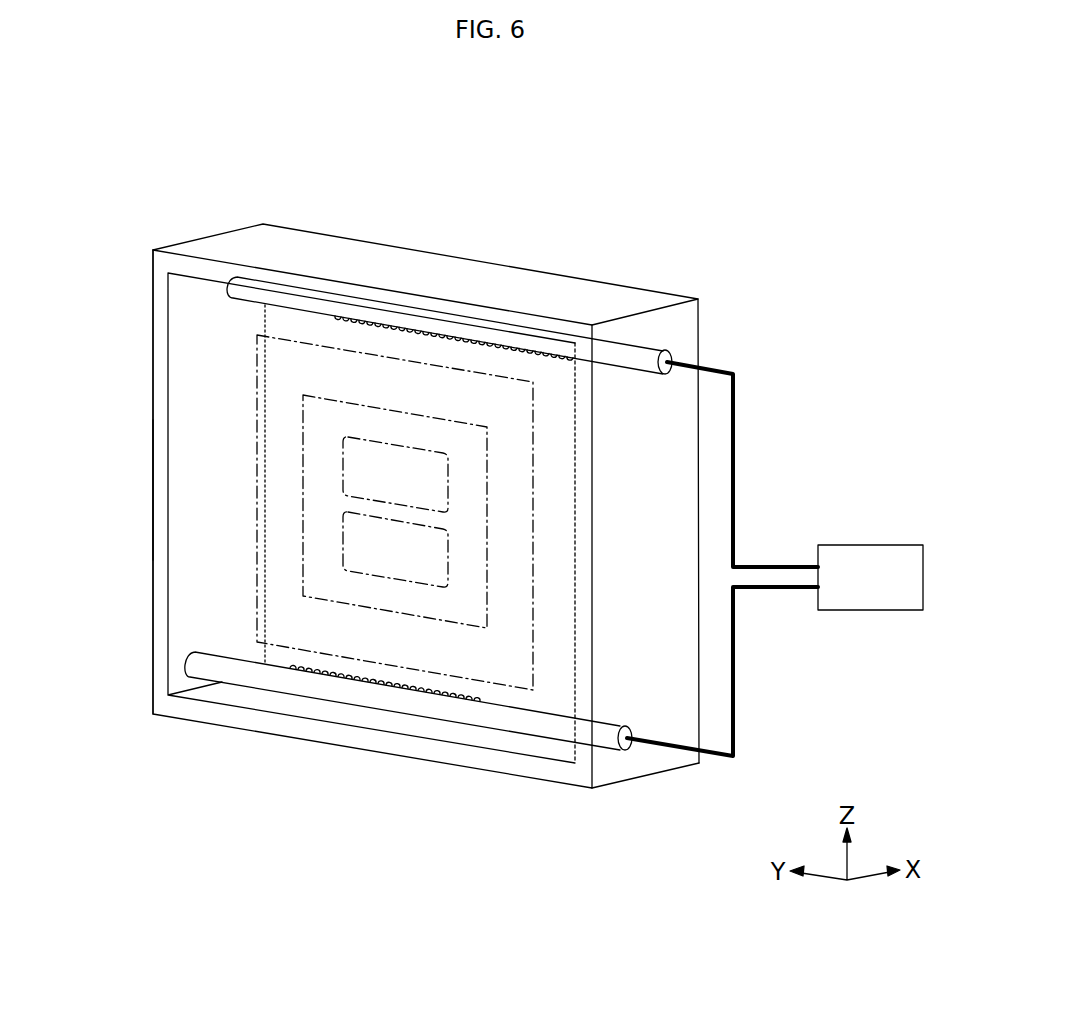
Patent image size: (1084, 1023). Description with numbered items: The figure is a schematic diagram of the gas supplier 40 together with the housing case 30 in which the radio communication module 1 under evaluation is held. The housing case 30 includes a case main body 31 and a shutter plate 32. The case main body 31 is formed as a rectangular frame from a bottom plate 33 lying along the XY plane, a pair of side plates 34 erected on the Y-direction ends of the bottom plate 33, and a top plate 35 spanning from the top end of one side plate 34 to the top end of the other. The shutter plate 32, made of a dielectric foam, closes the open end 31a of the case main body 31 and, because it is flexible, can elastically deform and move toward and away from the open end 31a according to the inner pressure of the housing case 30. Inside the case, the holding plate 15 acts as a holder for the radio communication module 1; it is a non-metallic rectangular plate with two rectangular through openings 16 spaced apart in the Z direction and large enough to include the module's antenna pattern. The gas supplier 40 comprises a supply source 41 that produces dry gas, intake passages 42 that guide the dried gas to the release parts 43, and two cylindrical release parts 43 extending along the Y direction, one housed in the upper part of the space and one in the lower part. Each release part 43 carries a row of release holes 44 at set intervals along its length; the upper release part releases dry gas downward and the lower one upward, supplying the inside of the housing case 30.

The radio communication module 1 is at (488, 458).
The holding plate 15 is at (257, 588).
The through openings 16 is at (420, 508).
The housing case 30 is at (325, 141).
The case main body 31 is at (430, 510).
The open end 31a is at (165, 500).
The shutter plate 32 is at (215, 337).
The bottom plate 33 is at (653, 777).
The side plates 34 is at (153, 348).
The top plate 35 is at (428, 270).
The gas supplier 40 is at (786, 559).
The supply source 41 is at (893, 537).
The intake passages 42 is at (771, 563).
The release parts 43 is at (492, 817).
The release holes 44 is at (560, 348).